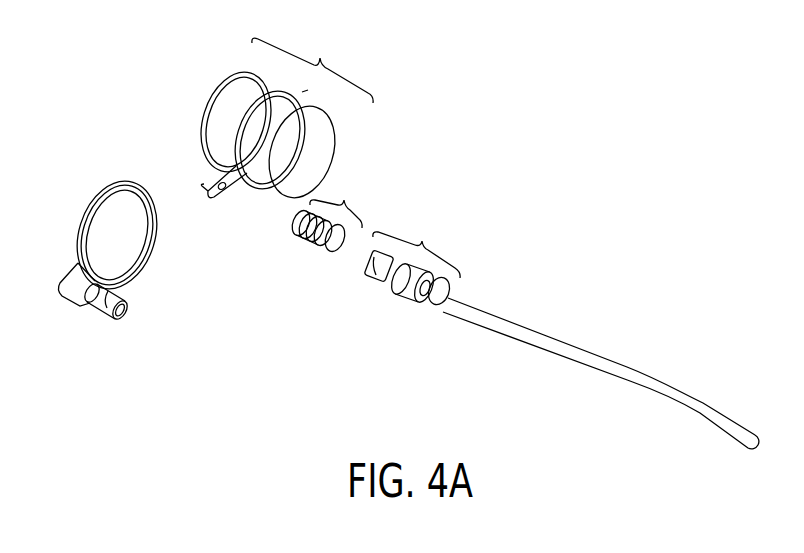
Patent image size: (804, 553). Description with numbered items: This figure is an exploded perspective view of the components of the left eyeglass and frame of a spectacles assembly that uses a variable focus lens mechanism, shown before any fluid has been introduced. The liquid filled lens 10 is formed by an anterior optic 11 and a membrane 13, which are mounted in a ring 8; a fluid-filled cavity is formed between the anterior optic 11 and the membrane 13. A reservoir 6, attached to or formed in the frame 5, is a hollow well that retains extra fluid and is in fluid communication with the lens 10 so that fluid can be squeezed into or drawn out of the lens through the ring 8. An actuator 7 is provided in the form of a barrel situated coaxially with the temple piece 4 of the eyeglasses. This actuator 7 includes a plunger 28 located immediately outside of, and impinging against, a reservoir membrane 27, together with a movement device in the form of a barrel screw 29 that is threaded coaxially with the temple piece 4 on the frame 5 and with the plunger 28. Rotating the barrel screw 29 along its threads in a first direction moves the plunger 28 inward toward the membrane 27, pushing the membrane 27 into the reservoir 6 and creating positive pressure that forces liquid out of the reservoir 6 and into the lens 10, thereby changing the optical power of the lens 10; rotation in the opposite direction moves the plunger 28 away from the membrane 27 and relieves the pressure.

The temple piece 4 is at (597, 365).
The frame 5 is at (138, 270).
The reservoir 6 is at (336, 202).
The actuator 7 is at (416, 246).
The ring 8 is at (243, 194).
The liquid filled lens 10 is at (312, 69).
The anterior optic 11 is at (222, 116).
The membrane 13 is at (321, 146).
The membrane 27 is at (333, 250).
The plunger 28 is at (378, 272).
The barrel screw 29 is at (408, 290).